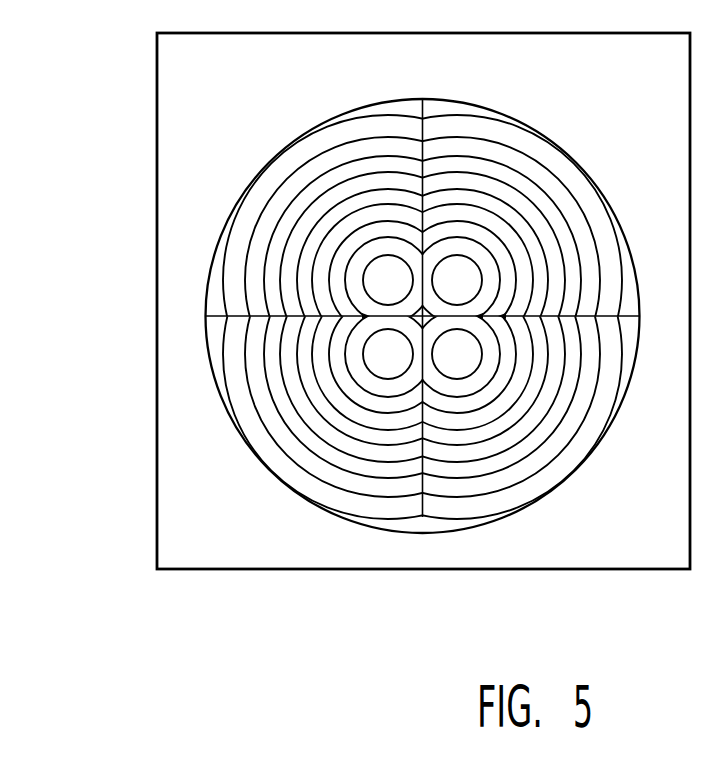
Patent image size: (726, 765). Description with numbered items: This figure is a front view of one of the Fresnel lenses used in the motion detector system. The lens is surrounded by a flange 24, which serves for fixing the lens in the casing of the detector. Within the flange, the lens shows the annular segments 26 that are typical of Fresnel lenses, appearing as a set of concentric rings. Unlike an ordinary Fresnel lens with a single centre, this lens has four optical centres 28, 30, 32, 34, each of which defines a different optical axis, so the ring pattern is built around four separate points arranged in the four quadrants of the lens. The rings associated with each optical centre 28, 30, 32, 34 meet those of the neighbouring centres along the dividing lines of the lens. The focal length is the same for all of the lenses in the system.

The flange 24 is at (182, 260).
The annular segments 26 is at (587, 190).
The optical centre 28 is at (468, 290).
The optical centre 30 is at (382, 300).
The optical centre 32 is at (387, 352).
The optical centre 34 is at (470, 358).